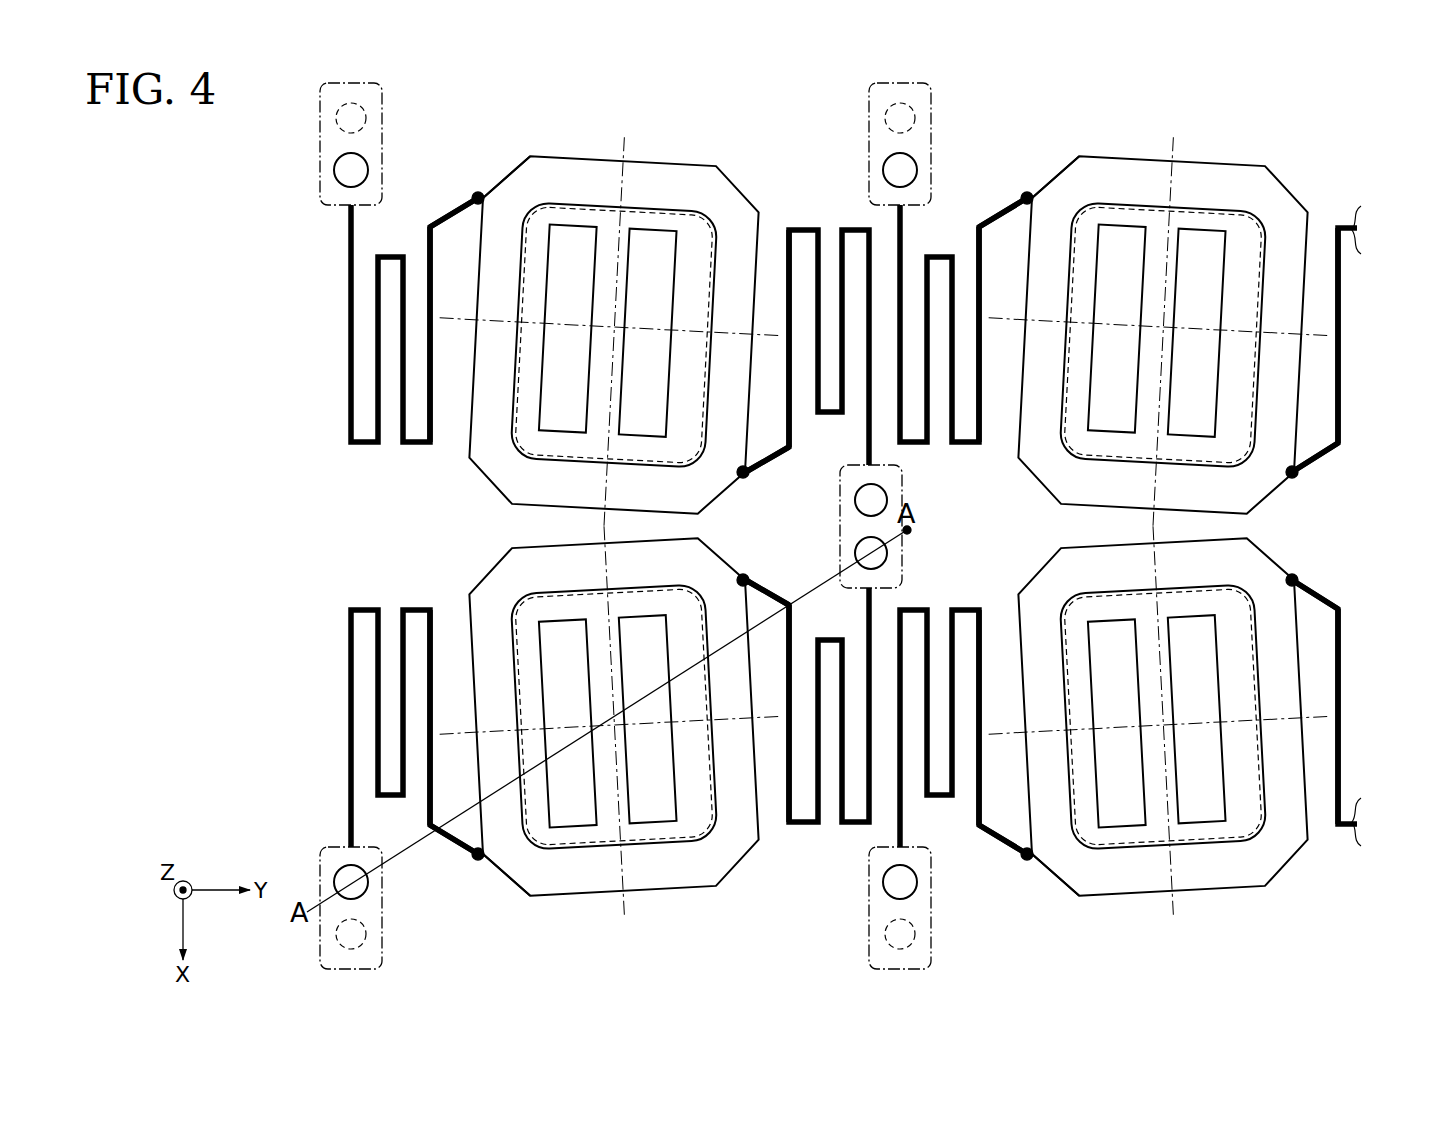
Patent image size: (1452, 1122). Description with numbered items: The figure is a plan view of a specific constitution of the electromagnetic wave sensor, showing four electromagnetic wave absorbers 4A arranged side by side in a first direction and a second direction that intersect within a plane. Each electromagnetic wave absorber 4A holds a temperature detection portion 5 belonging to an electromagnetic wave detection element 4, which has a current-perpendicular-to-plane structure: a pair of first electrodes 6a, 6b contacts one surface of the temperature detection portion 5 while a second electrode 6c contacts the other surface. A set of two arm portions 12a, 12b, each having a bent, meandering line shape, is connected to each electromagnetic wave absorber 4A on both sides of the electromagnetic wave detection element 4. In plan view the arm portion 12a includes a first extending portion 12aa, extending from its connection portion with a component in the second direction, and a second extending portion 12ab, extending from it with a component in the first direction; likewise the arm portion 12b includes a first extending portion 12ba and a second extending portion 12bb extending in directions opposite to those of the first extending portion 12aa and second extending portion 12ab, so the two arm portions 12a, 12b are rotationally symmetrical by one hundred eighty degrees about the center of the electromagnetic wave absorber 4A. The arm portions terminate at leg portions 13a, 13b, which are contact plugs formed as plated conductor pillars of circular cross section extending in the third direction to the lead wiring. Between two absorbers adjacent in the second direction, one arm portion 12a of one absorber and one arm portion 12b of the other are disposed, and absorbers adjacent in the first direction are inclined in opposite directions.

The electromagnetic wave detection element 4 is at (521, 147).
The electromagnetic wave absorber 4A is at (496, 168).
The temperature detection portion 5 is at (677, 205).
The first electrode 6a is at (652, 252).
The first electrode 6b is at (577, 243).
The second electrode 6c is at (563, 203).
The arm portion 12a is at (819, 215).
The first extending portion 12aa is at (772, 458).
The second extending portion 12ab is at (788, 262).
The arm portion 12b is at (388, 456).
The first extending portion 12ba is at (456, 213).
The second extending portion 12bb is at (433, 407).
The leg portion 13a is at (850, 485).
The leg portion 13b is at (336, 160).